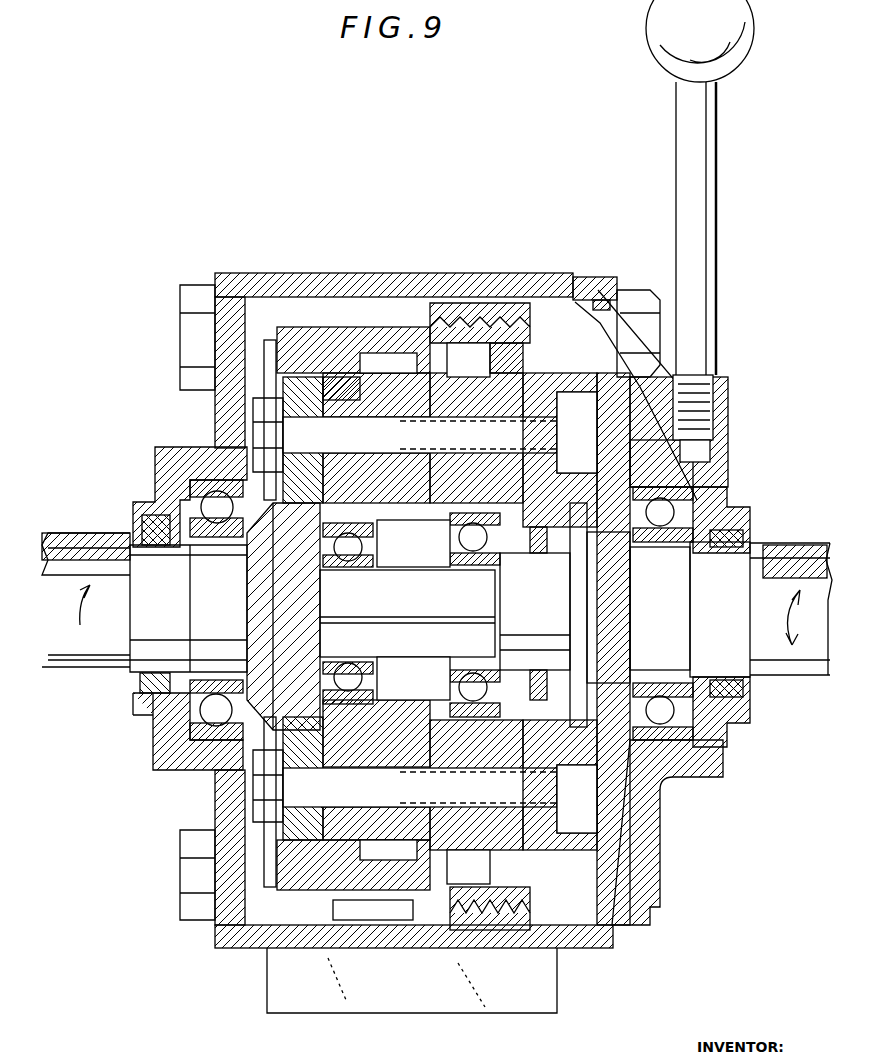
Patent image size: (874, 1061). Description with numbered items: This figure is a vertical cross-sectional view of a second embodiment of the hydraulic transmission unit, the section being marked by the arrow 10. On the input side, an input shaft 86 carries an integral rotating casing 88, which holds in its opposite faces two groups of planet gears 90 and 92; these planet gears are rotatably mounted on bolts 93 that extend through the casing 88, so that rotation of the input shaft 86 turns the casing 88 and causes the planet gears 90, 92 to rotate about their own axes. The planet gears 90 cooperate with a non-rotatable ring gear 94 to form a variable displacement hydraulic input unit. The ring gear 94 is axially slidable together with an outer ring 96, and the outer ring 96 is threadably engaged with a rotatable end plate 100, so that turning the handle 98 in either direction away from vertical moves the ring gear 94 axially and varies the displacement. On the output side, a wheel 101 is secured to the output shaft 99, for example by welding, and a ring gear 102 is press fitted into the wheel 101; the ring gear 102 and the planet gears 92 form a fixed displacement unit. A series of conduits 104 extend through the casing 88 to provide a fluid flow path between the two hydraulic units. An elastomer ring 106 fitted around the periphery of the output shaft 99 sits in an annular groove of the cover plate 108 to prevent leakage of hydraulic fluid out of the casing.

The section line indicator 10 is at (505, 182).
The input shaft 86 is at (85, 665).
The rotating casing 88 is at (272, 713).
The planet gears 90 is at (362, 330).
The planet gears 92 is at (563, 760).
The bolts 93 is at (300, 432).
The ring gear 94 is at (400, 360).
The outer ring 96 is at (435, 330).
The handle 98 is at (700, 172).
The output shaft 99 is at (803, 667).
The end plate 100 is at (710, 478).
The wheel 101 is at (613, 838).
The ring gear 102 is at (508, 850).
The conduits 104 is at (410, 615).
The elastomer ring 106 is at (540, 556).
The cover plate 108 is at (585, 540).